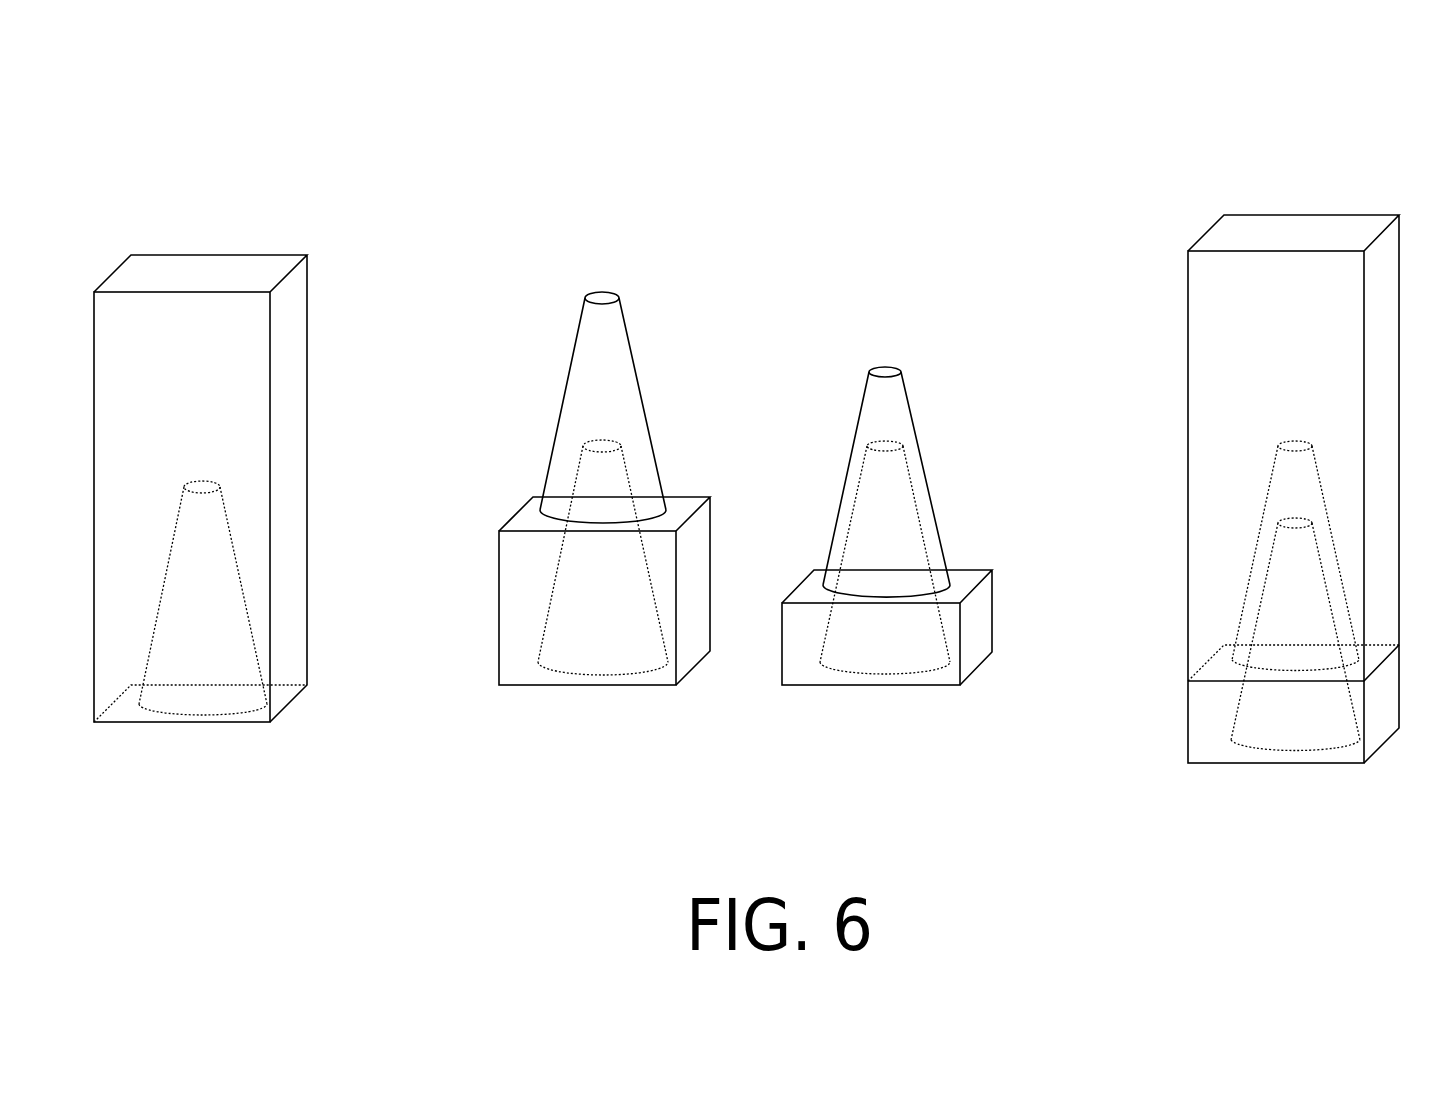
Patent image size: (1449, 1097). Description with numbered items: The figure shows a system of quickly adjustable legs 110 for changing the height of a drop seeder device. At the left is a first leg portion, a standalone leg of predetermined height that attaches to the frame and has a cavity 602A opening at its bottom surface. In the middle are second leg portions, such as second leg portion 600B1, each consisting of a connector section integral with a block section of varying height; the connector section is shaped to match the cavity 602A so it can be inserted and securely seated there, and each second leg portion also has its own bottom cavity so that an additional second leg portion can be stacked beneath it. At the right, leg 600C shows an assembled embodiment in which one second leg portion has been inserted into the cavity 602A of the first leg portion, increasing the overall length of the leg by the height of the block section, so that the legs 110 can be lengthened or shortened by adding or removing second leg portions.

The quickly adjustable legs 110 is at (1223, 107).
The cavity 602A is at (215, 718).
The second leg portion 600B1 is at (524, 746).
The leg 600C is at (1207, 813).